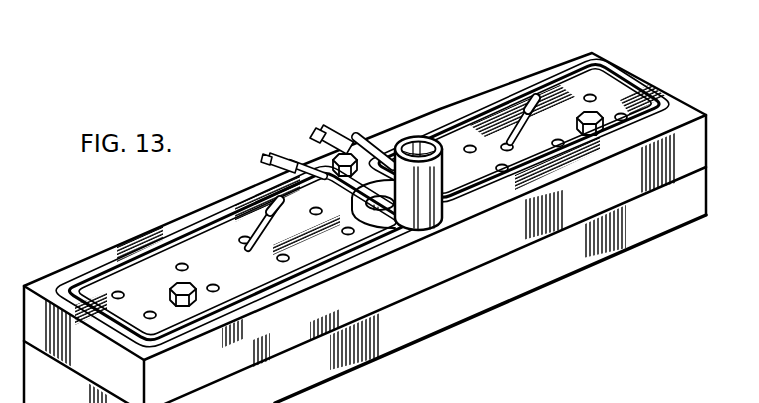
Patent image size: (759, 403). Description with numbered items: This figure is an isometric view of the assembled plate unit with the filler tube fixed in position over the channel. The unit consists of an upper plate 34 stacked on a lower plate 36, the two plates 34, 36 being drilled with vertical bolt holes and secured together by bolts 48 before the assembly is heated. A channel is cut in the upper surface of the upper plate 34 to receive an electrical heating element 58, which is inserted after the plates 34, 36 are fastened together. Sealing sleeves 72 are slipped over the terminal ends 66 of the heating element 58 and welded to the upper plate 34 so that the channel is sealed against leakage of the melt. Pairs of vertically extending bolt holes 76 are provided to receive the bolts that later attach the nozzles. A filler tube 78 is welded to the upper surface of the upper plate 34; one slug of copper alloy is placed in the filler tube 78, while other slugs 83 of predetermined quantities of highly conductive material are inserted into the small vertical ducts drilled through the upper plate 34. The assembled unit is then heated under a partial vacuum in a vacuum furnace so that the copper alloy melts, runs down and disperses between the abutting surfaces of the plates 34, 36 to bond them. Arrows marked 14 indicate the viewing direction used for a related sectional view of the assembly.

The direction of view arrows 14 is at (275, 104).
The upper plate 34 is at (698, 143).
The lower plate 36 is at (686, 203).
The bolts 48 is at (606, 110).
The electrical heating element 58 is at (634, 97).
The terminal ends 66 is at (330, 128).
The sealing sleeves 72 is at (320, 148).
The bolt holes 76 is at (149, 313).
The filler tube 78 is at (400, 140).
The slugs 83 is at (256, 232).